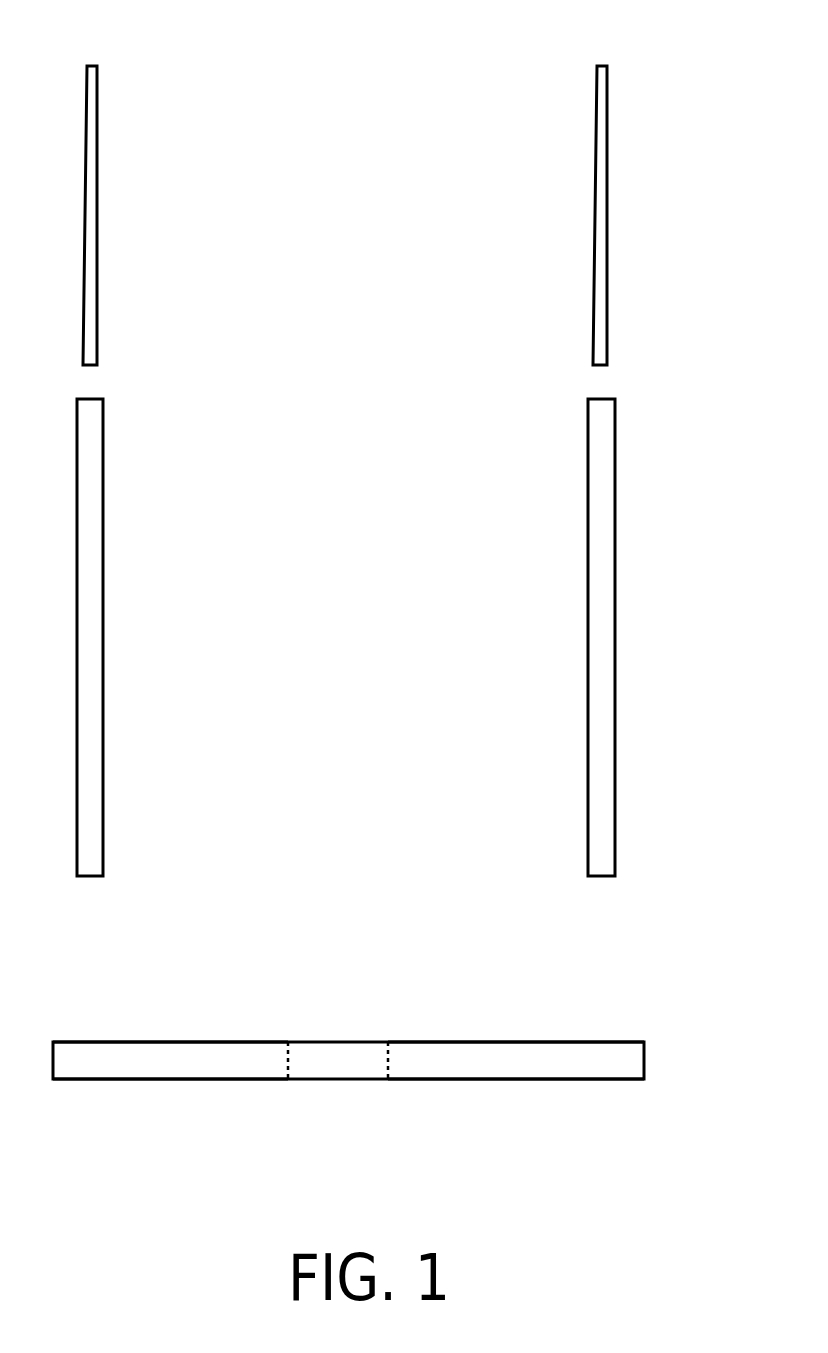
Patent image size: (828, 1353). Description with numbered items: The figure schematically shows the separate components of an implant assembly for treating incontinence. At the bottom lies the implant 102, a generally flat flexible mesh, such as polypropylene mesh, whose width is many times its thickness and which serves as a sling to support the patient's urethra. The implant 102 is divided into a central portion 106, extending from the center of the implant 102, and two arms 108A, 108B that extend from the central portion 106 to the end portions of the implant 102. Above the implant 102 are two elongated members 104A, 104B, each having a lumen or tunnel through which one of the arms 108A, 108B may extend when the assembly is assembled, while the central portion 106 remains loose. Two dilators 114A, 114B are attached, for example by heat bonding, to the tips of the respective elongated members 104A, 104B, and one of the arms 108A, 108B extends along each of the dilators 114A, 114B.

The implant 102 is at (507, 1042).
The elongated member 104A is at (103, 633).
The elongated member 104B is at (615, 592).
The central portion 106 is at (288, 1087).
The arm 108A is at (288, 1087).
The arm 108B is at (644, 1087).
The dilator 114A is at (92, 180).
The dilator 114B is at (607, 197).